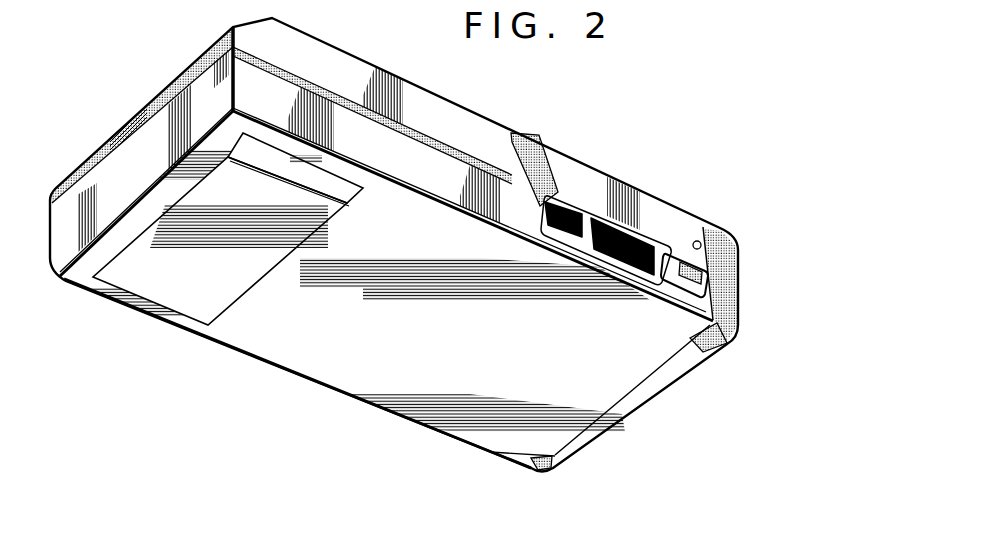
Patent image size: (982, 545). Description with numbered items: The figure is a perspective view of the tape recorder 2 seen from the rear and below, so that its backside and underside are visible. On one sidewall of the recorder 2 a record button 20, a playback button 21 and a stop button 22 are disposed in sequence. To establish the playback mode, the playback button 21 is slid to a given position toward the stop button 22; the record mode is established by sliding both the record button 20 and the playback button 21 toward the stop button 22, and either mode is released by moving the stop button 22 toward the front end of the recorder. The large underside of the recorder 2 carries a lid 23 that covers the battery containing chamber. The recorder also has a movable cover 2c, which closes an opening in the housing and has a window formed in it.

The tape recorder 2 is at (308, 368).
The movable cover 2c is at (603, 185).
The record button 20 is at (678, 252).
The playback button 21 is at (640, 230).
The stop button 22 is at (568, 203).
The lid 23 is at (175, 293).